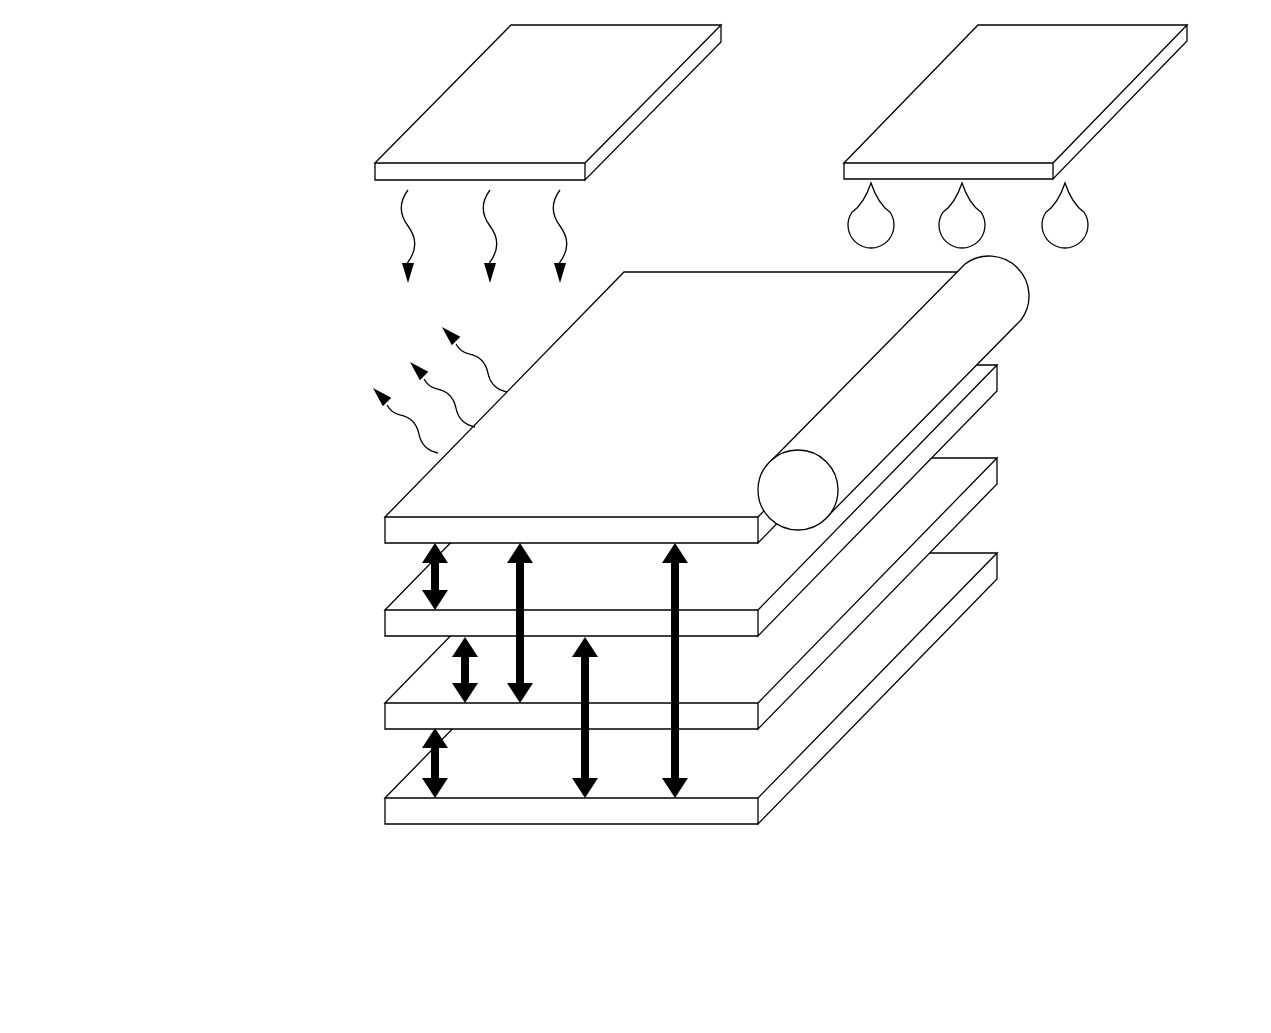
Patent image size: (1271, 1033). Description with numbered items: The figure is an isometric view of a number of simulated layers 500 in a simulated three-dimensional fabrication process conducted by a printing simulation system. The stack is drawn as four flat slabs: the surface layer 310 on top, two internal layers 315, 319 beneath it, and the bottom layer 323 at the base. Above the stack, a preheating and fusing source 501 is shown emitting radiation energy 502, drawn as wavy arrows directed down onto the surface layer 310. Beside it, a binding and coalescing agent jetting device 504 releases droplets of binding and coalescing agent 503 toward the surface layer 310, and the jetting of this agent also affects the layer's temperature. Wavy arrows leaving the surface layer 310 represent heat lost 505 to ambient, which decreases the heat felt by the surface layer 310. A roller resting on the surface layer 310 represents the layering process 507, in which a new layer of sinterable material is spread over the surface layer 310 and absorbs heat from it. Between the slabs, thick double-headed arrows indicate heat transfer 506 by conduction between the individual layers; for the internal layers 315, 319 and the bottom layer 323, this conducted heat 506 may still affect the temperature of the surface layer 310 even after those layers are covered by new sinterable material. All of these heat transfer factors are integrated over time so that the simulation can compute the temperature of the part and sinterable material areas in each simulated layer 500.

The simulated layers 500 is at (210, 125).
The preheating and fusing source 501 is at (529, 108).
The radiation energy 502 is at (365, 243).
The binding and coalescing agent 503 is at (1103, 233).
The binding and coalescing agent jetting device 504 is at (996, 108).
The heat lost to ambient 505 is at (353, 393).
The heat transfer by conduction 506 is at (555, 670).
The layering process 507 is at (883, 400).
The surface layer 310 is at (385, 512).
The internal layer 315 is at (383, 614).
The internal layer 319 is at (383, 707).
The bottom layer 323 is at (383, 802).